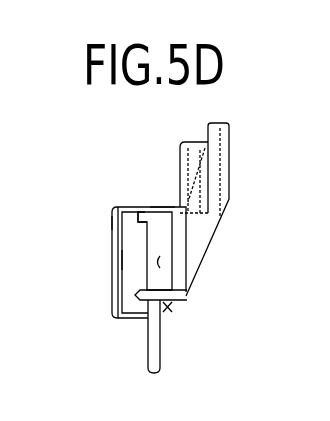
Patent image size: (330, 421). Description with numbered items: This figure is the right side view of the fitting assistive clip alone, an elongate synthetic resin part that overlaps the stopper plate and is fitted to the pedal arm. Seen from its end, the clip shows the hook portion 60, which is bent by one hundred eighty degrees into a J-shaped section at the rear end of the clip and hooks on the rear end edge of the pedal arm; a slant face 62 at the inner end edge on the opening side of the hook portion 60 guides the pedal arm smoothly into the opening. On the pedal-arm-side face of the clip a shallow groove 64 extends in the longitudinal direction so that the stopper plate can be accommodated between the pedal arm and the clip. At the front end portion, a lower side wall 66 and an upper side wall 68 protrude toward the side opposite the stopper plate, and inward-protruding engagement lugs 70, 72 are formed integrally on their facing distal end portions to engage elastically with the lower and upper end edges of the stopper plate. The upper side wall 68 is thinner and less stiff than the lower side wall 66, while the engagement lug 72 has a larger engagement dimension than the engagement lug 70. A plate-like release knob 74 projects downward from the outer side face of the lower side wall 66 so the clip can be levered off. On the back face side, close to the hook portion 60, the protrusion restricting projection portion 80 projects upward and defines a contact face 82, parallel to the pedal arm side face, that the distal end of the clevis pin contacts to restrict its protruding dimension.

The hook portion 60 is at (112, 309).
The slant face 62 is at (115, 224).
The groove 64 is at (163, 258).
The lower side wall 66 is at (172, 307).
The upper side wall 68 is at (162, 211).
The engagement lug 70 is at (137, 288).
The engagement lug 72 is at (138, 212).
The release knob 74 is at (150, 348).
The protrusion restricting projection portion 80 is at (213, 178).
The contact face 82 is at (183, 155).